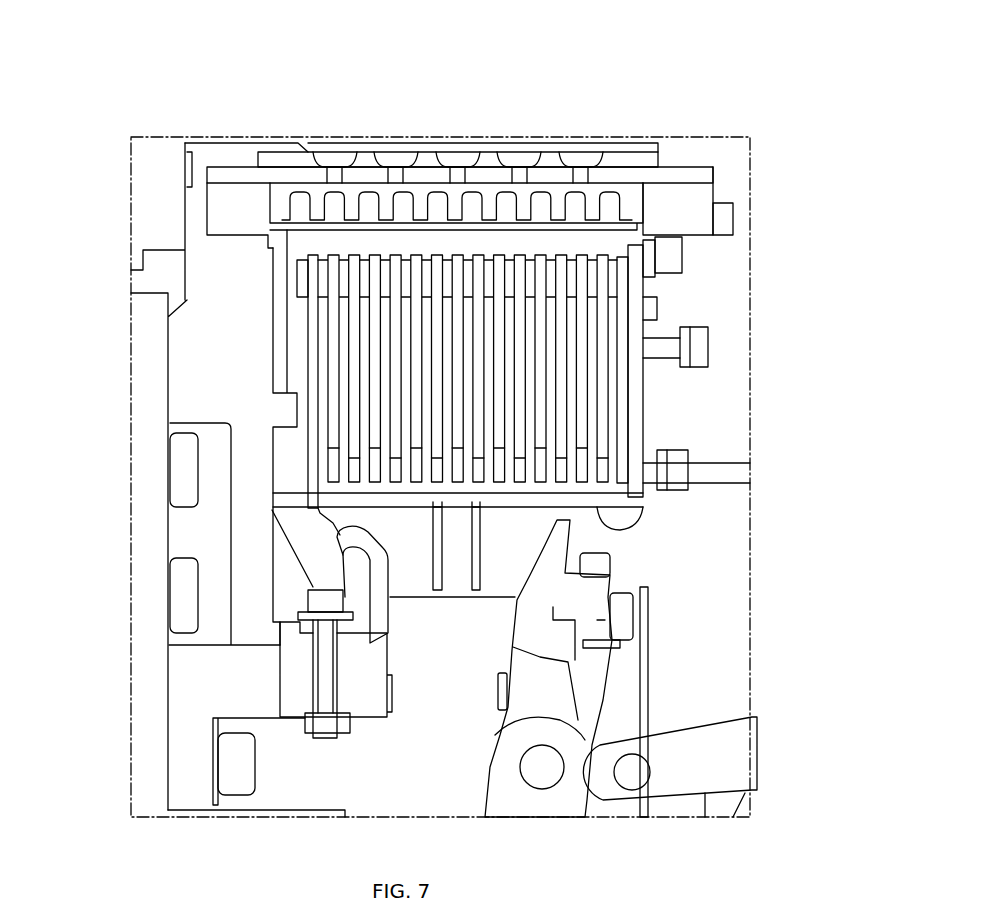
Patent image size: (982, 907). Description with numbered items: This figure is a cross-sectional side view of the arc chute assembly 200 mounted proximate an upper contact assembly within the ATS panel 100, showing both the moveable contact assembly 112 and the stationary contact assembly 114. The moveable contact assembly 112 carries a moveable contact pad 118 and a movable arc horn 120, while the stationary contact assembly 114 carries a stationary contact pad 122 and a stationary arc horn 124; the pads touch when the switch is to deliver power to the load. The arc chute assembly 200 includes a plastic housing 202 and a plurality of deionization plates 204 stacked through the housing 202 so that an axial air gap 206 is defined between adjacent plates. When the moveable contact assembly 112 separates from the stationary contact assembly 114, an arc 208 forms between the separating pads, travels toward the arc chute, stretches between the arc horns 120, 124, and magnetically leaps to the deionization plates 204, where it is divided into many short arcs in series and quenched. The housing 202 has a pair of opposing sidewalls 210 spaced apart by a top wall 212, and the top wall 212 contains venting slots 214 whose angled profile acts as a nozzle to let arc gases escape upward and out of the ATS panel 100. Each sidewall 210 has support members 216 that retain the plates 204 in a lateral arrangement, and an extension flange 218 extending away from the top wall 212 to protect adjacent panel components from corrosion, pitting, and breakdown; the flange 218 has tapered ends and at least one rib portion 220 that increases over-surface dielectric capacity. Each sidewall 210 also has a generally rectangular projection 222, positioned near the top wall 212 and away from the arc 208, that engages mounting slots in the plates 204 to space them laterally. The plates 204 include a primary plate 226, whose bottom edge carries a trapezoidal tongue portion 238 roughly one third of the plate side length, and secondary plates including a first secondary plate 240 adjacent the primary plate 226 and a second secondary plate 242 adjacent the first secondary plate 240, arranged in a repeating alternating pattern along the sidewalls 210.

The ATS panel 100 is at (123, 48).
The moveable contact assembly 112 is at (676, 695).
The stationary contact assembly 114 is at (207, 693).
The moveable contact pad 118 is at (495, 690).
The movable arc horn 120 is at (523, 613).
The stationary contact pad 122 is at (390, 698).
The stationary arc horn 124 is at (377, 613).
The arc chute assembly 200 is at (252, 171).
The housing 202 is at (727, 190).
The deionization plates 204 is at (628, 391).
The axial air gap 206 is at (614, 440).
The arc 208 is at (320, 513).
The sidewall 210 is at (630, 420).
The top wall 212 is at (622, 157).
The venting slots 214 is at (575, 150).
The support members 216 is at (645, 516).
The extension flange 218 is at (612, 533).
The rib portion 220 is at (432, 512).
The projection 222 is at (612, 308).
The primary plate 226 is at (310, 357).
The tongue portion 238 is at (313, 490).
The first secondary plate 240 is at (330, 384).
The second secondary plate 242 is at (355, 415).